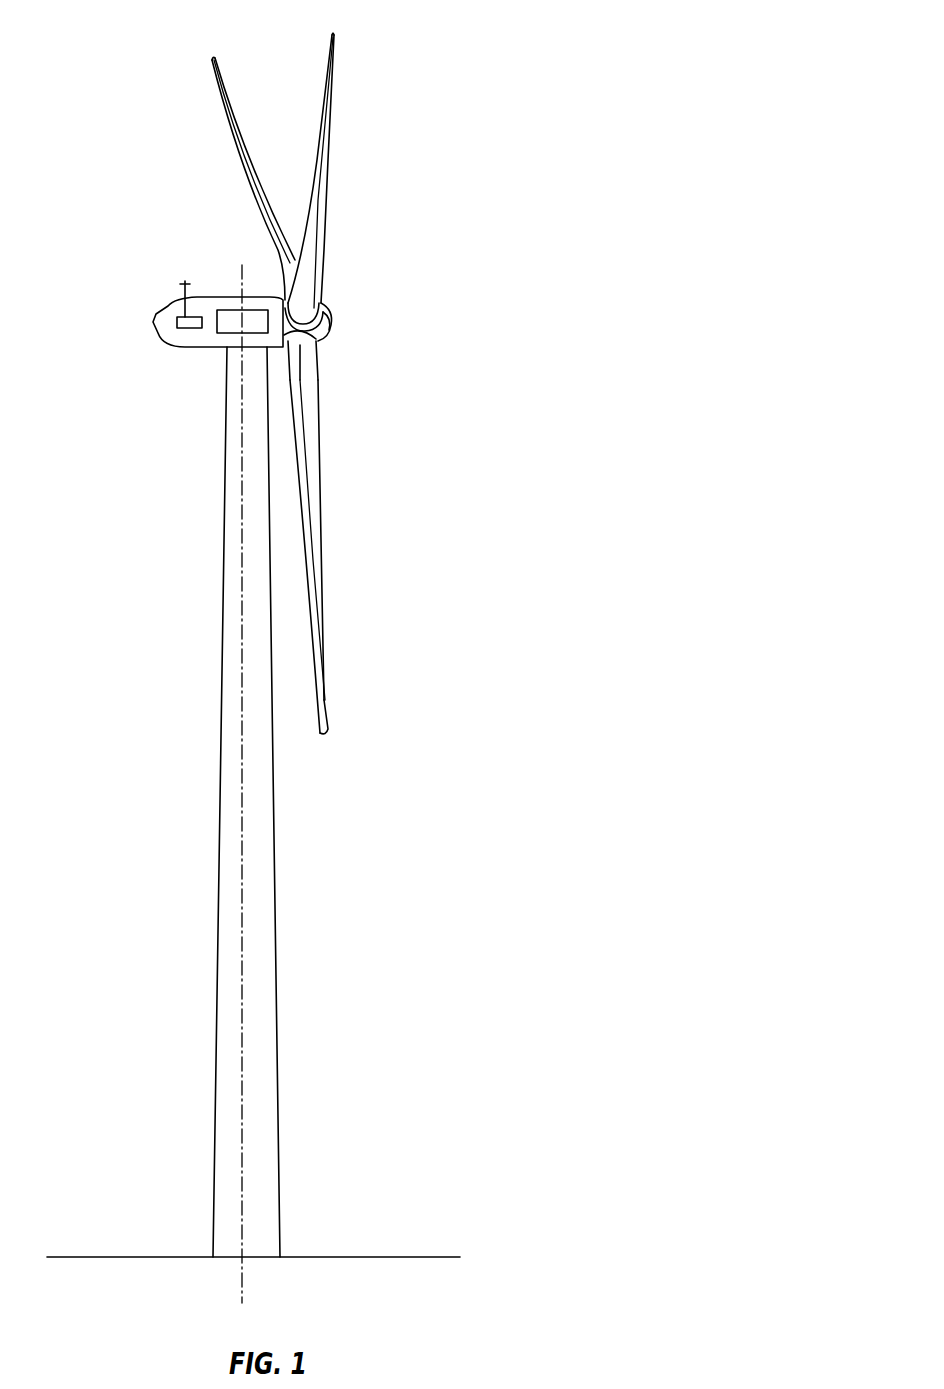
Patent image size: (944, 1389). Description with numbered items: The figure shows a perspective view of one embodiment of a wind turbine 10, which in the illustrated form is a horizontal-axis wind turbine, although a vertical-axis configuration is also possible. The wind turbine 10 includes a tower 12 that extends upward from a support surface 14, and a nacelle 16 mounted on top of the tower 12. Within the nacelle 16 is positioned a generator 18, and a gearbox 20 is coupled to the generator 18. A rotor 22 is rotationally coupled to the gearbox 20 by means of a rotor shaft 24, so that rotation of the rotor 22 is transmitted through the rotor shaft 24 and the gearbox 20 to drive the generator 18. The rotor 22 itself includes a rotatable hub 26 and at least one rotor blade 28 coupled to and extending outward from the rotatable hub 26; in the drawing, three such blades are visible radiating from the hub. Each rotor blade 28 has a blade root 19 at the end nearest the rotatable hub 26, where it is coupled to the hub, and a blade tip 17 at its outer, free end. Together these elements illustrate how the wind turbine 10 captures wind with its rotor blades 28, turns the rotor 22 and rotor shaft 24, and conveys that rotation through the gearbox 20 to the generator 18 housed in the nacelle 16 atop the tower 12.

The wind turbine 10 is at (484, 90).
The tower 12 is at (218, 941).
The support surface 14 is at (132, 1257).
The nacelle 16 is at (178, 346).
The blade tip 17 is at (325, 733).
The generator 18 is at (181, 313).
The blade root 19 is at (318, 357).
The gearbox 20 is at (222, 298).
The rotor 22 is at (336, 292).
The rotor shaft 24 is at (277, 323).
The rotatable hub 26 is at (329, 330).
The rotor blade 28 is at (230, 130).